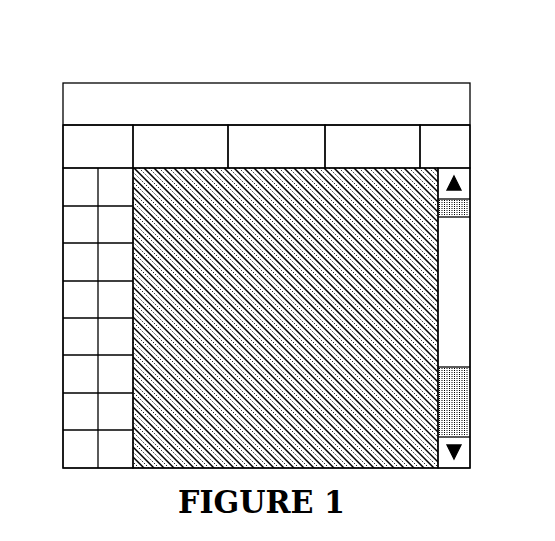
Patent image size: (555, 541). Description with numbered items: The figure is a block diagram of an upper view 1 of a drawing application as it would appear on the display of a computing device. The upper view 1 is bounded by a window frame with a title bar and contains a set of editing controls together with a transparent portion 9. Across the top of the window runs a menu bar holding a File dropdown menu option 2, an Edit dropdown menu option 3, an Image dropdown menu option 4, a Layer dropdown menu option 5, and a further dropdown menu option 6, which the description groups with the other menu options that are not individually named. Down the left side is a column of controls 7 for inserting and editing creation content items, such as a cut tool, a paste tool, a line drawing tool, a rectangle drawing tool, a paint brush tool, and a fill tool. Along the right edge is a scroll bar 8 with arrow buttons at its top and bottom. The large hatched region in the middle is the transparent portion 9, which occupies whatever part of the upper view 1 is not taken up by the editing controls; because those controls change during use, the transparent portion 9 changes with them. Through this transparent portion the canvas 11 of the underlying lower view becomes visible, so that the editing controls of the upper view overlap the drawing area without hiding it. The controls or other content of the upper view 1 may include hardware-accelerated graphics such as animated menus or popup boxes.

The upper view 1 is at (96, 51).
The File dropdown menu option 2 is at (63, 147).
The Edit dropdown menu option 3 is at (182, 125).
The Image dropdown menu option 4 is at (280, 125).
The Layer dropdown menu option 5 is at (383, 125).
The dropdown menu option 6 is at (457, 125).
The controls for inserting and editing creation content items 7 is at (63, 222).
The scroll bar 8 is at (470, 203).
The transparent portion 9 is at (163, 470).
The canvas 11 is at (309, 275).